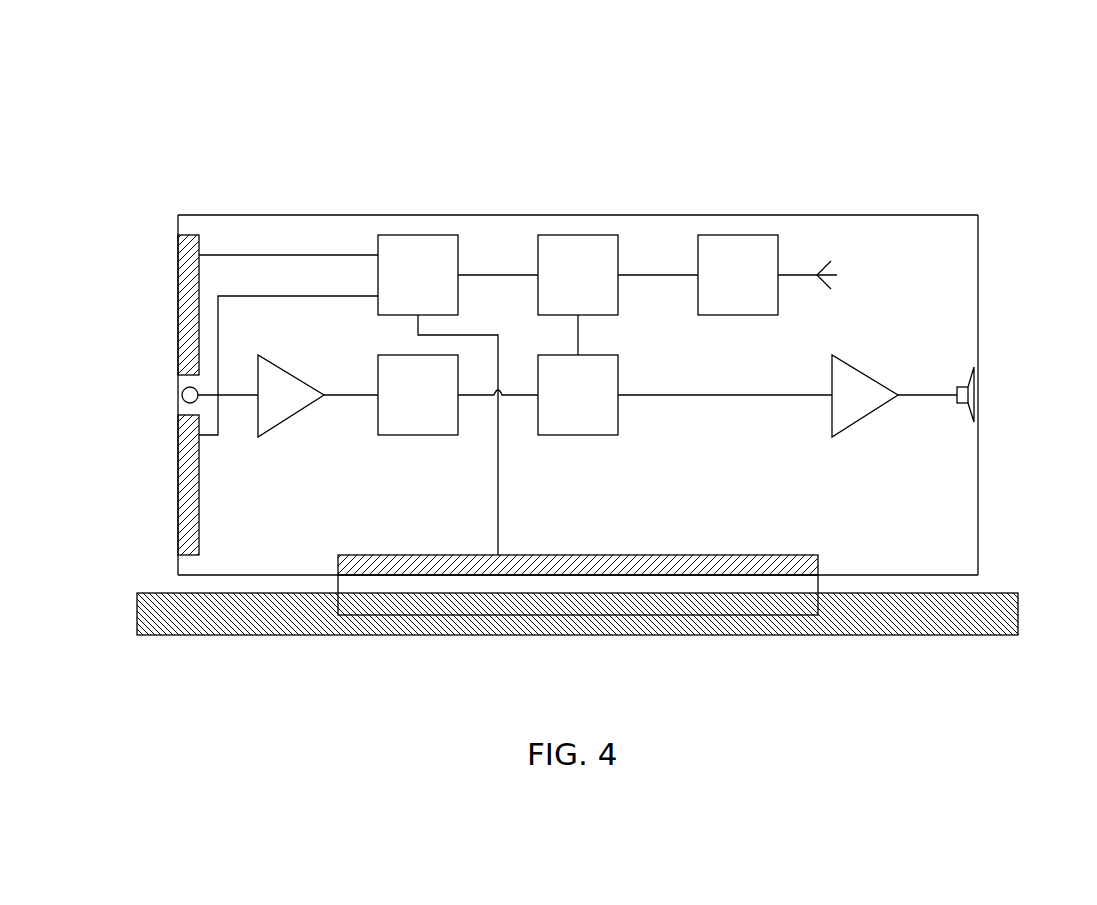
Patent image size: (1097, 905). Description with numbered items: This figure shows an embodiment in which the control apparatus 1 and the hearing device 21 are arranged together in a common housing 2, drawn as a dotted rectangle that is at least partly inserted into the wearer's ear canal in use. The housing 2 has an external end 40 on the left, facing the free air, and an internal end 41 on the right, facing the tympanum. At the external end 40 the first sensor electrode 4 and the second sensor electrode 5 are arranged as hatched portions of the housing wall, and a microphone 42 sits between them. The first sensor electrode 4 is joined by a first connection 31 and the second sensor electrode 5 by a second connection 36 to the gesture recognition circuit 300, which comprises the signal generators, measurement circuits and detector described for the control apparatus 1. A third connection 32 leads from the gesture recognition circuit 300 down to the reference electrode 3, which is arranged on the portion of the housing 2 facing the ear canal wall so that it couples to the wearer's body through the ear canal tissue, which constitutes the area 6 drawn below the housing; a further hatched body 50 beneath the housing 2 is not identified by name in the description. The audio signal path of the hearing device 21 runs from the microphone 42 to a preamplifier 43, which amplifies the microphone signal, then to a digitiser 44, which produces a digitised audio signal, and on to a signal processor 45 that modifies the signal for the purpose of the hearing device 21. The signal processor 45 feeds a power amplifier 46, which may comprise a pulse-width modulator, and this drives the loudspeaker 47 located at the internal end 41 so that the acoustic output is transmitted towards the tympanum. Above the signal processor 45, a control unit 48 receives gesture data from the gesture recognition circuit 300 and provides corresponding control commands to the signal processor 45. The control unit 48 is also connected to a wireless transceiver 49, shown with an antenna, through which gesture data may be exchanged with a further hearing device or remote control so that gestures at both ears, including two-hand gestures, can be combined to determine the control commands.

The control apparatus 1 is at (576, 347).
The hearing device 21 is at (576, 362).
The housing 2 is at (576, 362).
The reference electrode 3 is at (747, 568).
The first sensor electrode 4 is at (187, 271).
The second sensor electrode 5 is at (185, 500).
The area 6 is at (787, 608).
The first connection 31 is at (318, 247).
The third connection 32 is at (493, 537).
The second connection 36 is at (357, 290).
The external end 40 is at (172, 538).
The internal end 41 is at (989, 534).
The microphone 42 is at (182, 390).
The preamplifier 43 is at (268, 420).
The digitiser 44 is at (400, 412).
The signal processor 45 is at (598, 425).
The power amplifier 46 is at (845, 415).
The loudspeaker 47 is at (973, 385).
The control unit 48 is at (605, 248).
The wireless transceiver 49 is at (763, 248).
The ground / base 50 is at (178, 615).
The gesture recognition circuit 300 is at (430, 255).